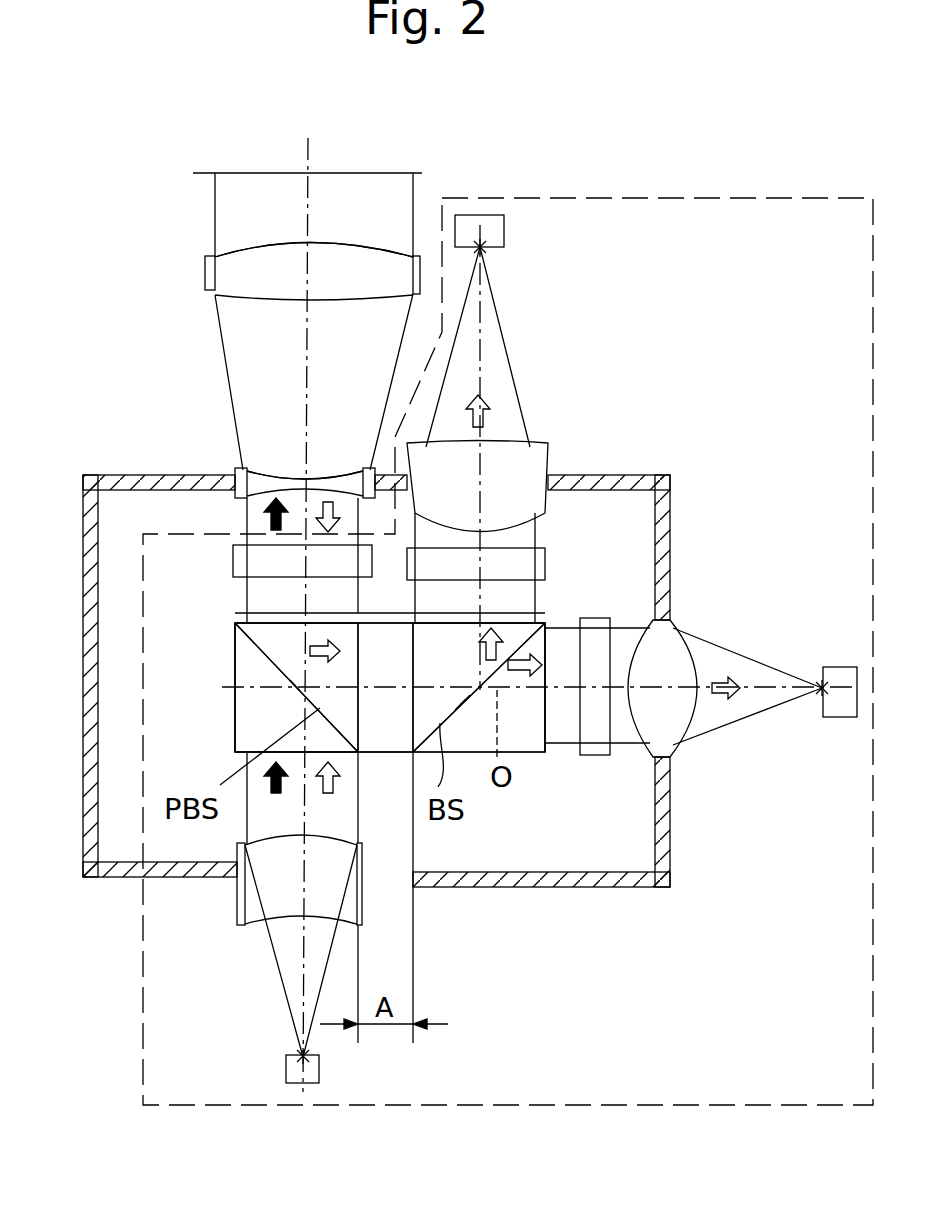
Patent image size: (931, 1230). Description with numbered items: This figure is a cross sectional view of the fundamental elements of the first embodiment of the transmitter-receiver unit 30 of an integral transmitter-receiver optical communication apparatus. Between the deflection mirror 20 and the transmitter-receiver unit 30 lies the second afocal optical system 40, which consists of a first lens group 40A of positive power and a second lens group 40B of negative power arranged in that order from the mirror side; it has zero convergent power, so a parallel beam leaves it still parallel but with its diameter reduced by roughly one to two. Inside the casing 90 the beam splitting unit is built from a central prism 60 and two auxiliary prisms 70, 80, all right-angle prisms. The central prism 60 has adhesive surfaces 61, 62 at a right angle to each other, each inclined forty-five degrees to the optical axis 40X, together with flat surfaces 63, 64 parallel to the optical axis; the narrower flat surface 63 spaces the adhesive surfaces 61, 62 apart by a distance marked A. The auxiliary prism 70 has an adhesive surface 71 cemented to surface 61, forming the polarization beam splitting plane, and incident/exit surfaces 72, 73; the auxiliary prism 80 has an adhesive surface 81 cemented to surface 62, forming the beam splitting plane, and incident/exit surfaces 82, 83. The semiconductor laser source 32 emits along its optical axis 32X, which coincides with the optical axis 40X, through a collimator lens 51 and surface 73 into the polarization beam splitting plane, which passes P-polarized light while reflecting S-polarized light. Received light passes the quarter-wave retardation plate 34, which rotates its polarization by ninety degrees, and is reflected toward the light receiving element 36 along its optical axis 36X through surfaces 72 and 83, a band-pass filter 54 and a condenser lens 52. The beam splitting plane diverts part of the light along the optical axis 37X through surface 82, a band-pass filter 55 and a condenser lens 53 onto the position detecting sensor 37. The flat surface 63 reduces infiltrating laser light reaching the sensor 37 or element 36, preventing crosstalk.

The deflection mirror 20 is at (200, 173).
The transmitter-receiver unit 30 is at (140, 983).
The semiconductor laser source 32 is at (293, 1066).
The optical axis of semiconductor laser source 32X is at (302, 967).
The λ/4 retardation plate 34 is at (233, 557).
The light receiving element 36 is at (842, 712).
The optical axis of light receiving element 36X is at (763, 690).
The position detecting sensor 37 is at (504, 234).
The optical axis of position detecting sensor 37X is at (487, 357).
The second afocal optical system 40 is at (112, 285).
The first lens group 40A is at (205, 276).
The second lens group 40B is at (262, 470).
The optical axis of second afocal optical system 40X is at (308, 203).
The collimator lens 51 is at (243, 903).
The condenser lens 52 is at (677, 652).
The condenser lens 53 is at (548, 460).
The band-pass filter 54 is at (600, 747).
The band-pass filter 55 is at (543, 562).
The central prism 60 is at (385, 640).
The adhesive surface 61 is at (278, 647).
The adhesive surface 62 is at (468, 705).
The flat surface 63 is at (384, 745).
The flat surface 64 is at (340, 604).
The auxiliary prism 70 is at (270, 707).
The adhesive surface 71 is at (295, 685).
The incident/exit surface 72 is at (235, 660).
The incident/exit surface 73 is at (343, 753).
The auxiliary prism 80 is at (523, 743).
The adhesive surface 81 is at (460, 705).
The incident/exit surface 82 is at (514, 615).
The incident/exit surface 83 is at (547, 648).
The casing 90 is at (123, 475).